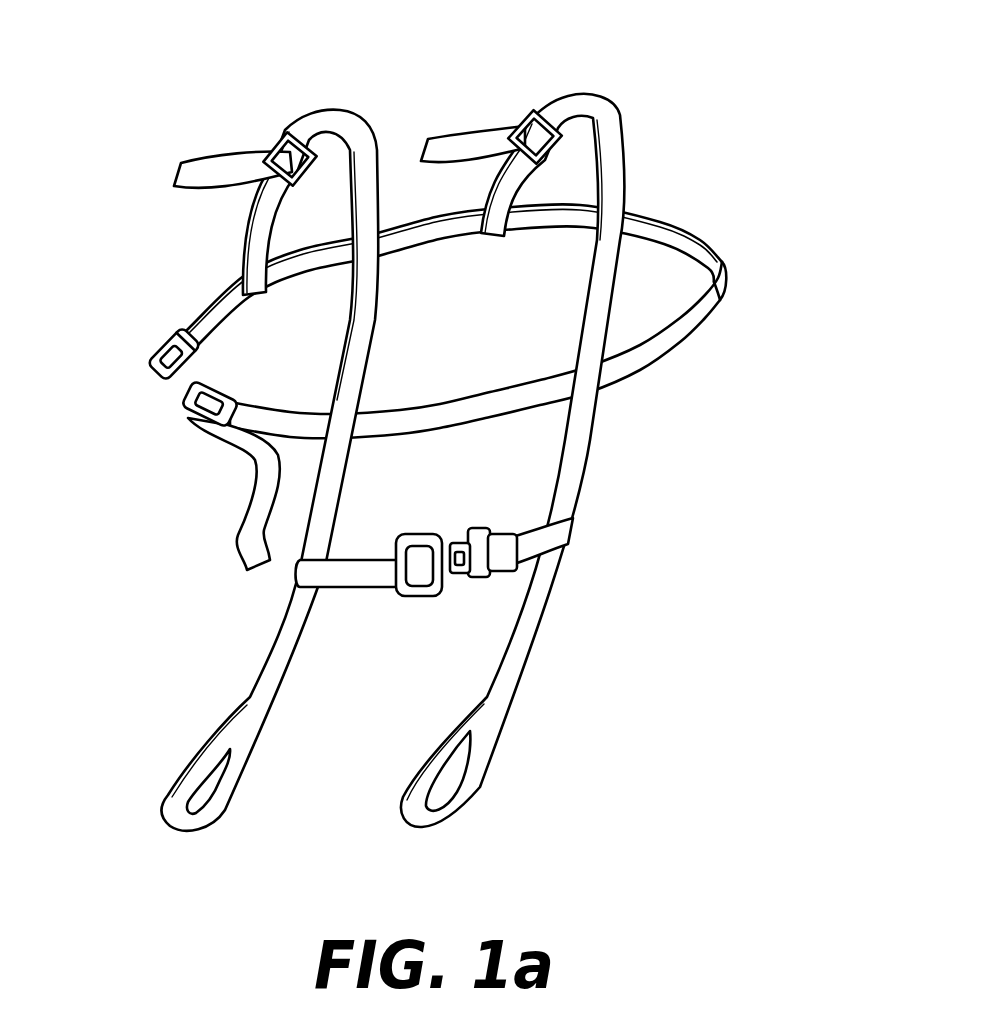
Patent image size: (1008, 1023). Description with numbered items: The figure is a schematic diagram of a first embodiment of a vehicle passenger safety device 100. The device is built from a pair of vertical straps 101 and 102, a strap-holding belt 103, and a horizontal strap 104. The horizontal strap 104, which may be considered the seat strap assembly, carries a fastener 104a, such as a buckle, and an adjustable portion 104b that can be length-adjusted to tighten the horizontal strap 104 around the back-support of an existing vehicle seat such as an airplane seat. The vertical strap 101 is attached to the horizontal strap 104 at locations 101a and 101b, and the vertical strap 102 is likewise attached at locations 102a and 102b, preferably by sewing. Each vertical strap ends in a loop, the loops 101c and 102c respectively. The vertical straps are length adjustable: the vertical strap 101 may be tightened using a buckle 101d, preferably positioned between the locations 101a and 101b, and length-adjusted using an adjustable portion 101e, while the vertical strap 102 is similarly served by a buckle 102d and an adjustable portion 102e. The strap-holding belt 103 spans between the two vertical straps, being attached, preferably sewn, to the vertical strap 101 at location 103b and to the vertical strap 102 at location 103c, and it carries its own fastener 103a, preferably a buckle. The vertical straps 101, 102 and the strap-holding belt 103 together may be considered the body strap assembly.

The vehicle passenger safety device 100 is at (468, 422).
The vertical strap 101 is at (255, 426).
The location 101a is at (242, 284).
The location 101b is at (364, 410).
The loop 101c is at (158, 808).
The buckle 101d is at (322, 117).
The adjustable portion 101e is at (178, 174).
The vertical strap 102 is at (538, 422).
The location 102a is at (476, 204).
The location 102b is at (606, 388).
The loop 102c is at (482, 787).
The buckle 102d is at (518, 128).
The adjustable portion 102e is at (430, 142).
The strap-holding belt 103 is at (438, 557).
The fastener 103a is at (480, 533).
The location 103b is at (288, 572).
The location 103c is at (575, 533).
The horizontal strap 104 is at (723, 298).
The fastener 104a is at (195, 420).
The adjustable portion 104b is at (237, 545).